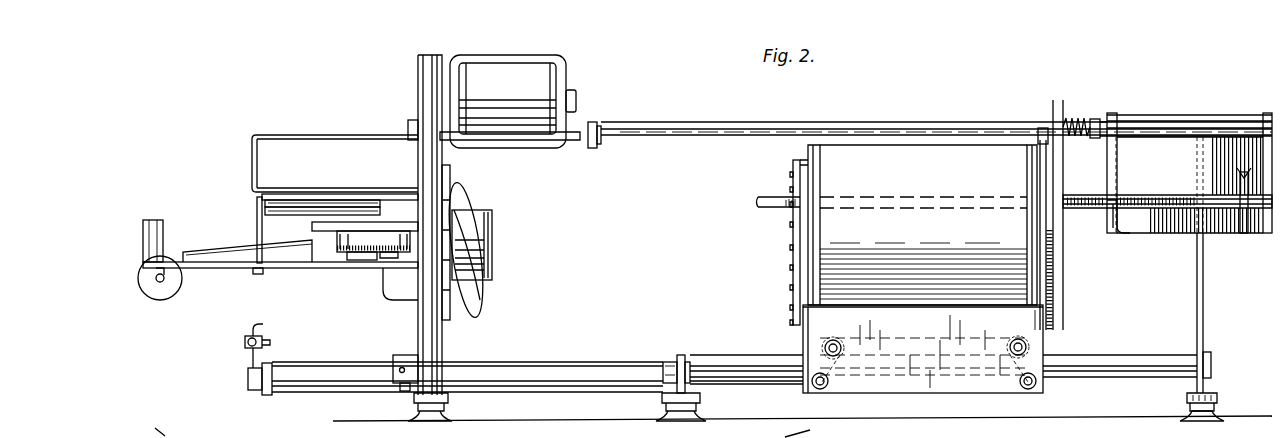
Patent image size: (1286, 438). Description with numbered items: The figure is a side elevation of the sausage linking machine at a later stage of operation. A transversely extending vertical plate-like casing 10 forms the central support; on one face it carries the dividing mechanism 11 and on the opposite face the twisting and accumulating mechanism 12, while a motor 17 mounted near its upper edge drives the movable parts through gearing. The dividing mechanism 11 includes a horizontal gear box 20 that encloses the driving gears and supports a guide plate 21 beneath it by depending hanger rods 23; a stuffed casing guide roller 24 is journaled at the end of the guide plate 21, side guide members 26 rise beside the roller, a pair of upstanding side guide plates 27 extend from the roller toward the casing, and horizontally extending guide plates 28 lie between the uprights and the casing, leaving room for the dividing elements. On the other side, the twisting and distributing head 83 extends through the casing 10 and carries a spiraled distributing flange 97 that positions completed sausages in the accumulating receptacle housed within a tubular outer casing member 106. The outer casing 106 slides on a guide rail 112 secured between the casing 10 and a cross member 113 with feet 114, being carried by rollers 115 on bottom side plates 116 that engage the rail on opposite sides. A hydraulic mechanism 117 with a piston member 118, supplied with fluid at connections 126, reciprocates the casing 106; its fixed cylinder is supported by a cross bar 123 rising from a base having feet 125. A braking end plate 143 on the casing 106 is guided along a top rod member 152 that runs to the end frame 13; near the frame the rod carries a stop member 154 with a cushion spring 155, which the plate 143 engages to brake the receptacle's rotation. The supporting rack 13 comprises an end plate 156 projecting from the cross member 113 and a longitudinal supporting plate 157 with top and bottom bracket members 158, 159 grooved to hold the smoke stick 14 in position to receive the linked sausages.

The supporting plate-like casing 10 is at (426, 72).
The dividing mechanism 11 is at (244, 204).
The twisting and accumulating mechanism 12 is at (784, 244).
The supporting rack 13 is at (1195, 114).
The smoke stick 14 is at (1165, 197).
The motor 17 is at (523, 70).
The gear box 20 is at (337, 145).
The guide plate 21 is at (308, 265).
The hanger rods 23 is at (257, 227).
The stuffed casing guide roller 24 is at (162, 296).
The side guide members 26 is at (151, 224).
The upstanding side guide plates 27 is at (232, 258).
The horizontally extending guide plates 28 is at (374, 254).
The twisting and distributing head 83 is at (485, 240).
The spiraled distributing flange 97 is at (482, 295).
The tubular outer casing member 106 is at (917, 165).
The guide rail 112 is at (755, 362).
The cross member 113 is at (1216, 392).
The feet 114 is at (1220, 414).
The rollers 115 is at (837, 338).
The bottom side plates 116 is at (892, 388).
The hydraulic mechanism 117 is at (352, 380).
The piston member 118 is at (762, 379).
The cross bar 123 is at (680, 357).
The feet 125 is at (672, 421).
The fluid connections 126 is at (266, 341).
The braking end plate 143 is at (1062, 181).
The top rod member 152 is at (723, 128).
The stop member 154 is at (1107, 103).
The cushion spring 155 is at (1067, 118).
The end plate 156 is at (1204, 297).
The supporting plate 157 is at (1223, 143).
The top bracket member 158 is at (1243, 218).
The bottom bracket member 159 is at (1128, 232).